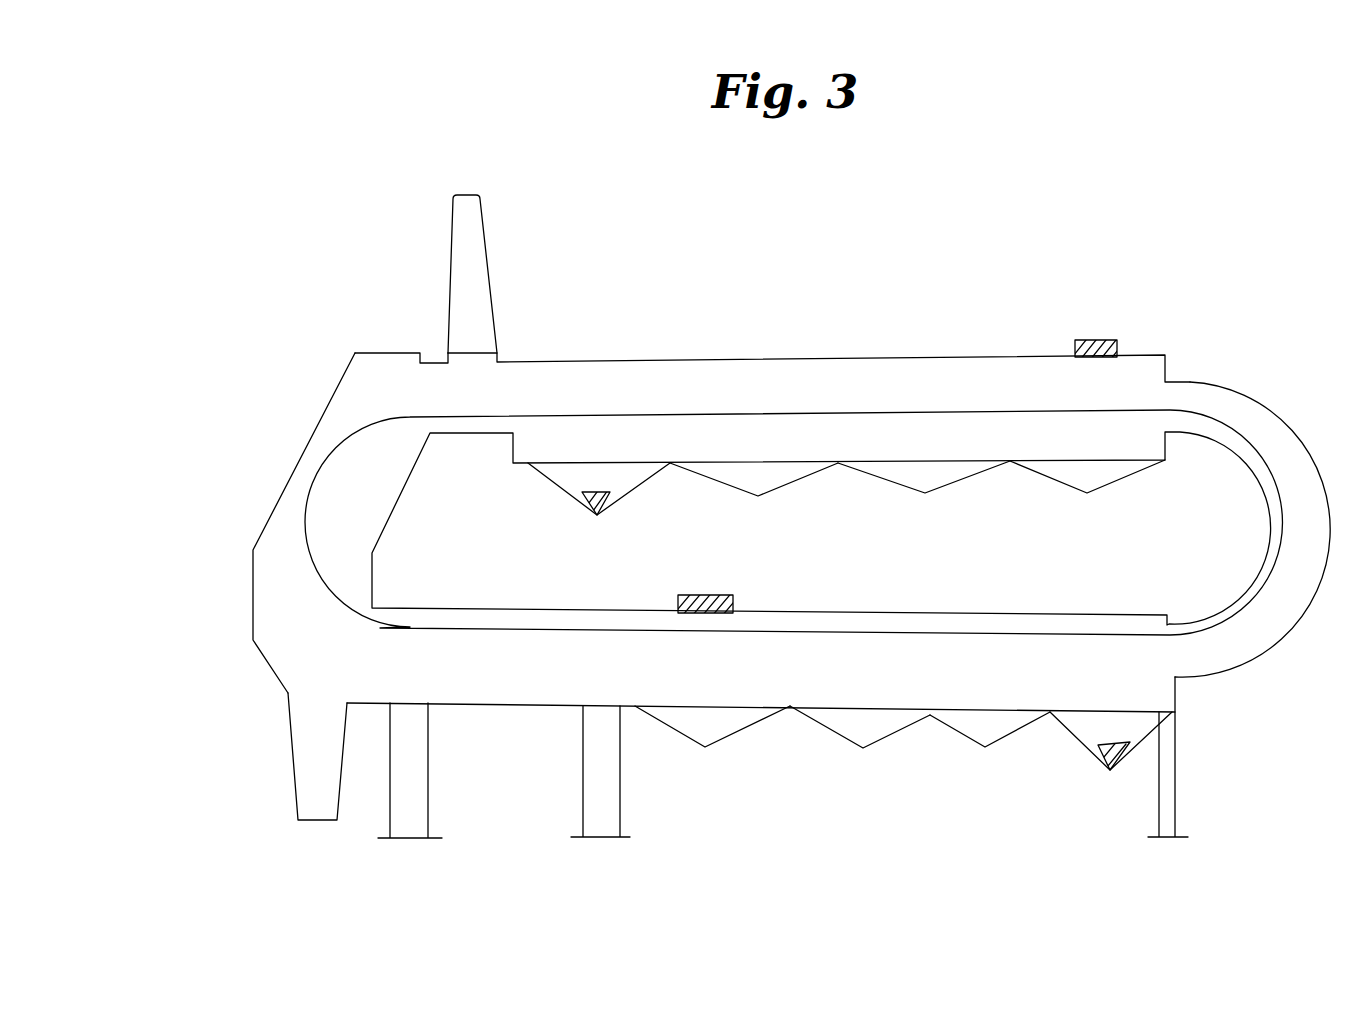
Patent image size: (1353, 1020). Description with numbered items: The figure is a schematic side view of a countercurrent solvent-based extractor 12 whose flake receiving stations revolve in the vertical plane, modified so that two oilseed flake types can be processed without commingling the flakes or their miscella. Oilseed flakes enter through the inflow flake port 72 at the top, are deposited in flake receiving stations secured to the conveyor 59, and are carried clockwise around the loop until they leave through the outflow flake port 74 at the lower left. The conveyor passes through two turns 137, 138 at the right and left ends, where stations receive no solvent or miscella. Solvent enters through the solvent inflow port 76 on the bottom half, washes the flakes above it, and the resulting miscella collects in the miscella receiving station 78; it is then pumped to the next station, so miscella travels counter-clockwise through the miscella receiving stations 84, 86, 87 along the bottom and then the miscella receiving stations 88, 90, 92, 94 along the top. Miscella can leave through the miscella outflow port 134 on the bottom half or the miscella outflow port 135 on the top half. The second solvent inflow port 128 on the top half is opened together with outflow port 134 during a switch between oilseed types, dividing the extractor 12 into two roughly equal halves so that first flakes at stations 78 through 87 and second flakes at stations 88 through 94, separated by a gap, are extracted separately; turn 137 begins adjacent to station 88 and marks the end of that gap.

The extractor 12 is at (398, 232).
The conveyor 59 is at (341, 443).
The inflow flake port 72 is at (470, 192).
The outflow flake port 74 is at (316, 823).
The solvent inflow port 76 is at (676, 594).
The miscella receiving station 78 is at (712, 728).
The miscella receiving station 84 is at (858, 732).
The miscella receiving station 86 is at (992, 727).
The miscella receiving station 87 is at (1098, 722).
The miscella receiving station 88 is at (1085, 478).
The miscella receiving station 90 is at (925, 475).
The miscella receiving station 92 is at (757, 475).
The miscella receiving station 94 is at (603, 478).
The solvent inflow port 128 is at (1097, 340).
The miscella outflow port 134 is at (1110, 770).
The miscella outflow port 135 is at (583, 516).
The turn 137 is at (1250, 405).
The turn 138 is at (270, 507).